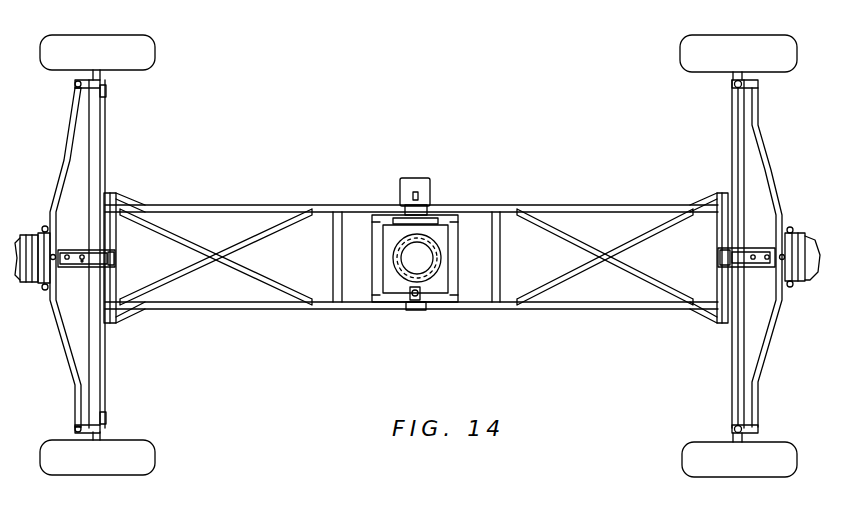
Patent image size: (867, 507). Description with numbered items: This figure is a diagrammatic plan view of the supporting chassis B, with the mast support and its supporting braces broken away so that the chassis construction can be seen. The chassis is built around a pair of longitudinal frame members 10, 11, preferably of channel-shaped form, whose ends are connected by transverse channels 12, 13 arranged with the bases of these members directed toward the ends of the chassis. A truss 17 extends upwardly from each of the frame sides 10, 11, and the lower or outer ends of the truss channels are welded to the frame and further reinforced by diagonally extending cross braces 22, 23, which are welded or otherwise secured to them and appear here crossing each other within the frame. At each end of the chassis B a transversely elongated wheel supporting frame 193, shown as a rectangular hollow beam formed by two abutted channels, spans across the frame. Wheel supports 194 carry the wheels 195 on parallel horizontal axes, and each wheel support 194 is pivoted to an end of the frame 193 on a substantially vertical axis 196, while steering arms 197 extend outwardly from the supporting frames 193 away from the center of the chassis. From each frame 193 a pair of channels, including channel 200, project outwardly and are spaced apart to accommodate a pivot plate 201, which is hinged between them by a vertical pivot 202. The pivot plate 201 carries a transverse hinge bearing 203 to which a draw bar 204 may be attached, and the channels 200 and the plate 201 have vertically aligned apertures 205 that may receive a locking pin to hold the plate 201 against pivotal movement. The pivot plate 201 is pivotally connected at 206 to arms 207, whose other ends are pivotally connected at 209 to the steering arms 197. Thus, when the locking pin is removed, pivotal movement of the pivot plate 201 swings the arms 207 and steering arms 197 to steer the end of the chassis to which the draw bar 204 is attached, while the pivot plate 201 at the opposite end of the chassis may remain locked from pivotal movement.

The frame member 10 is at (358, 205).
The frame member 11 is at (552, 305).
The transverse channel 12 is at (125, 316).
The transverse channel 13 is at (718, 238).
The truss 17 is at (255, 203).
The cross brace 22 is at (182, 275).
The cross brace 23 is at (618, 246).
The wheel supporting frame 193 is at (97, 140).
The wheel support 194 is at (100, 73).
The wheel 195 is at (106, 50).
The vertical axis 196 is at (103, 95).
The steering arm 197 is at (78, 92).
The channel 200 is at (98, 253).
The pivot plate 201 is at (63, 272).
The vertical pivot 202 is at (84, 262).
The transverse hinge bearing 203 is at (33, 231).
The draw bar 204 is at (30, 276).
The aperture 205 is at (70, 250).
The pivotal connection 206 is at (67, 254).
The arm 207 is at (68, 152).
The pivotal connection 209 is at (75, 83).
The supporting chassis B is at (555, 203).